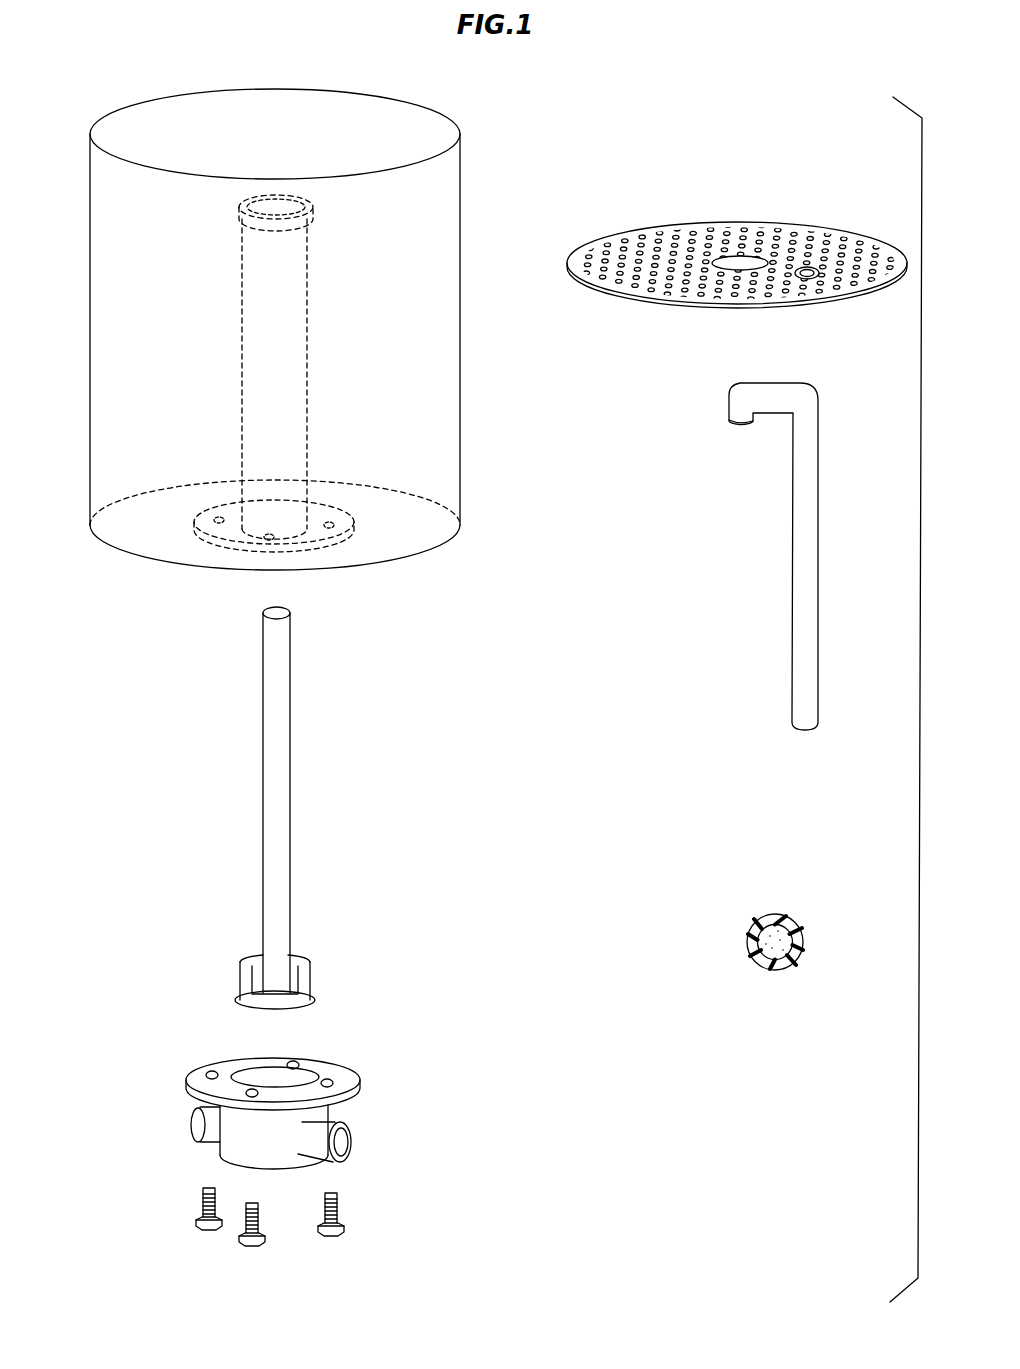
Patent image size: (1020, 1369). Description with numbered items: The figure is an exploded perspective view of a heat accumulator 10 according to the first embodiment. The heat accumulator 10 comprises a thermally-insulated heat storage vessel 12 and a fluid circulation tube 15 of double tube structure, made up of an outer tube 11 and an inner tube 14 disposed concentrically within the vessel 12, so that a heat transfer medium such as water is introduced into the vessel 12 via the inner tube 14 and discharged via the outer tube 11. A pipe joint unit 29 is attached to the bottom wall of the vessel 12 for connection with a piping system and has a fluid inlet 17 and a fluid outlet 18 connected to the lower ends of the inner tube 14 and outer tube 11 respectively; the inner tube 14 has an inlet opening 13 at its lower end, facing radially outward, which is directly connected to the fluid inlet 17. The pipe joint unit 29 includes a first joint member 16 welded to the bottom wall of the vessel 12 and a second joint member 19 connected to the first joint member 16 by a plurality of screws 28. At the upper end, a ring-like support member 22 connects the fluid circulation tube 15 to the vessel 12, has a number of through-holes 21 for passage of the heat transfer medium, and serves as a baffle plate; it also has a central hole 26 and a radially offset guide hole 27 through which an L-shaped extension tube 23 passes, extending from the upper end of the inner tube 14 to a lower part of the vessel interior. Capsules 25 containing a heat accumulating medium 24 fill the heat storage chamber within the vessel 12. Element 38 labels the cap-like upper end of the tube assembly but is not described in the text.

The heat accumulator 10 is at (545, 155).
The outer tube 11 is at (307, 426).
The heat storage vessel 12 is at (474, 413).
The inlet opening 13 is at (240, 983).
The inner tube 14 is at (290, 797).
The fluid circulation tube 15 is at (462, 590).
The first joint member 16 is at (219, 548).
The fluid inlet 17 is at (188, 1122).
The fluid outlet 18 is at (352, 1142).
The second joint member 19 is at (295, 1167).
The through-holes 21 is at (680, 230).
The support member 22 is at (730, 264).
The L-shaped extension tube 23 is at (818, 562).
The heat accumulating medium 24 is at (777, 947).
The capsules 25 is at (792, 920).
The central hole 26 is at (717, 265).
The guide hole 27 is at (803, 277).
The screws 28 is at (367, 1277).
The pipe joint unit 29 is at (377, 1068).
The tube cap 38 is at (313, 207).